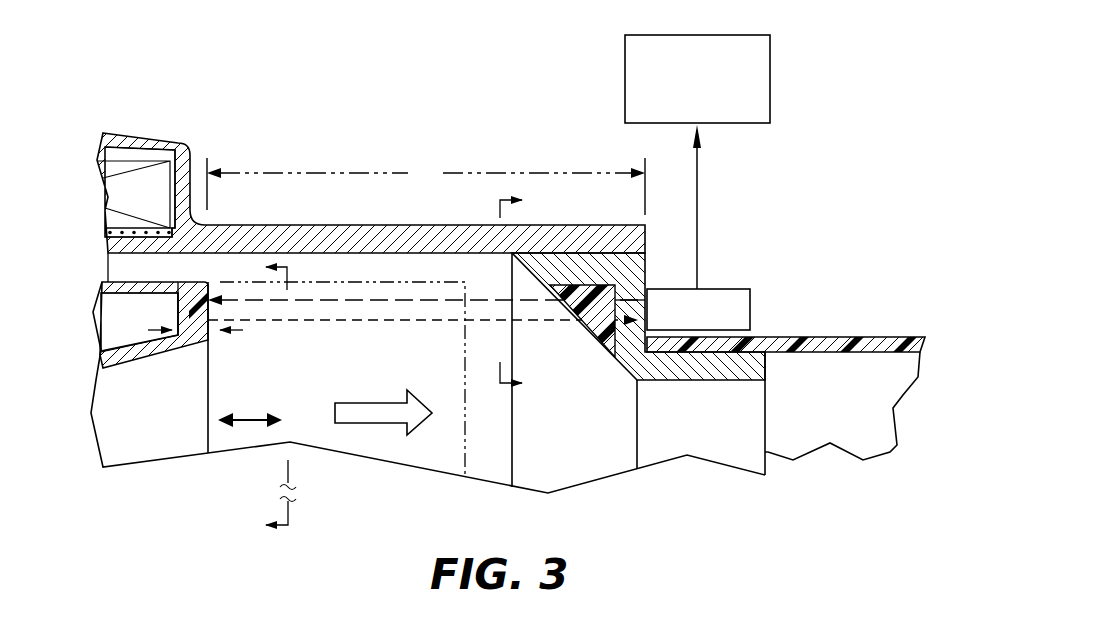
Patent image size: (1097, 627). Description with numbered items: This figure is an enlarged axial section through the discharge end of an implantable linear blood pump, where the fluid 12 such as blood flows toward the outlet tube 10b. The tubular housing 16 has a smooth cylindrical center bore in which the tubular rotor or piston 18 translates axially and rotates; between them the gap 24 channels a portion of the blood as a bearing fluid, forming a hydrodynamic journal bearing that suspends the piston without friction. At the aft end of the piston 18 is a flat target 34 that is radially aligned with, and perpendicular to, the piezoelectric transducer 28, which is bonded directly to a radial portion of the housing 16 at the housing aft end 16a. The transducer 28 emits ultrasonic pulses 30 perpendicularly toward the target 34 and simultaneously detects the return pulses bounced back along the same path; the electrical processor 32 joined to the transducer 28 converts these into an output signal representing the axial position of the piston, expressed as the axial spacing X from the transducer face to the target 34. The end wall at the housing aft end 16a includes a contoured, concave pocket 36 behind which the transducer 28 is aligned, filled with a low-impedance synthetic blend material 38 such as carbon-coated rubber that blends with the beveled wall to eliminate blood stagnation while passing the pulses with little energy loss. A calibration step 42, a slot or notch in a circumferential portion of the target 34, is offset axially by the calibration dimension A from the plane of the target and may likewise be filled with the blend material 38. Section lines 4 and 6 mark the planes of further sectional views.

The tubular housing 16 is at (190, 150).
The housing aft end 16a is at (648, 263).
The piston 18 is at (97, 394).
The gap 24 is at (122, 267).
The transducer 28 is at (733, 289).
The ultrasonic pulses 30 is at (423, 300).
The electrical processor 32 is at (625, 57).
The target 34 is at (209, 389).
The pocket 36 is at (618, 364).
The synthetic blend material 38 is at (583, 325).
The step 42 is at (202, 341).
The outlet tube 10b is at (821, 337).
The fluid 12 is at (380, 402).
The axial offset A is at (243, 330).
The axial spacing X is at (426, 186).
The section line 4- 4 is at (527, 292).
The section line 6- 6 is at (342, 397).